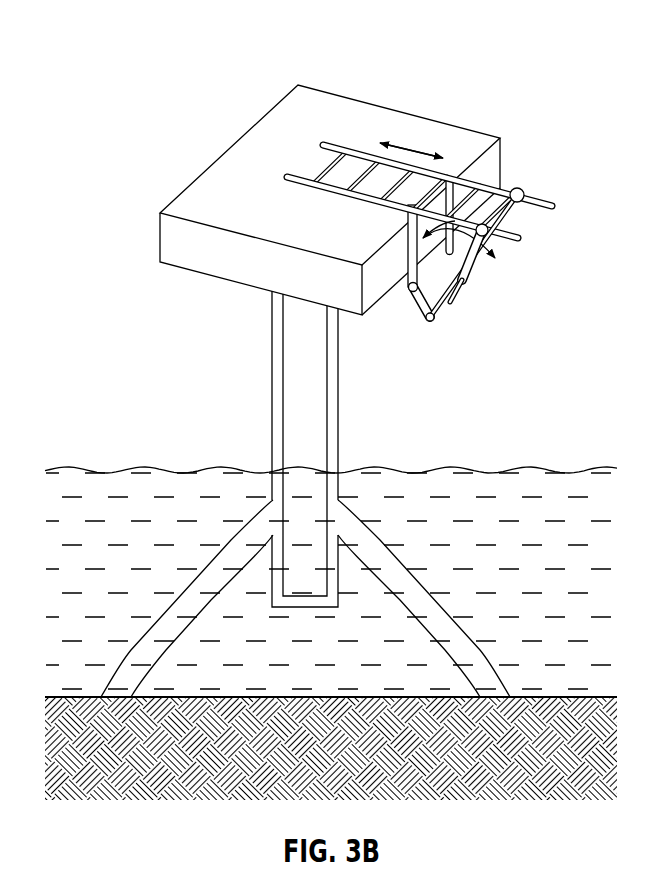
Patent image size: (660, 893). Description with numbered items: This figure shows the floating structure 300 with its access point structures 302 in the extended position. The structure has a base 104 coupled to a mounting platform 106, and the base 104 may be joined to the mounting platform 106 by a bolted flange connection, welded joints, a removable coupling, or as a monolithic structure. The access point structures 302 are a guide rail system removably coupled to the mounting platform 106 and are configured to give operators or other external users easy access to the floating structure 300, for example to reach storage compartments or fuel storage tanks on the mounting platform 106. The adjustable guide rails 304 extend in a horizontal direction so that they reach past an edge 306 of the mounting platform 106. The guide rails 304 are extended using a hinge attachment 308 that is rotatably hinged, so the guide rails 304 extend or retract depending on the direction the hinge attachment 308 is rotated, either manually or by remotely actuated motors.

The floating structure 300 is at (339, 416).
The access point structures 302 is at (558, 252).
The adjustable guide rails 304 is at (303, 177).
The edge 306 is at (477, 160).
The hinge attachment 308 is at (488, 295).
The base 104 is at (272, 365).
The mounting platform 106 is at (500, 158).